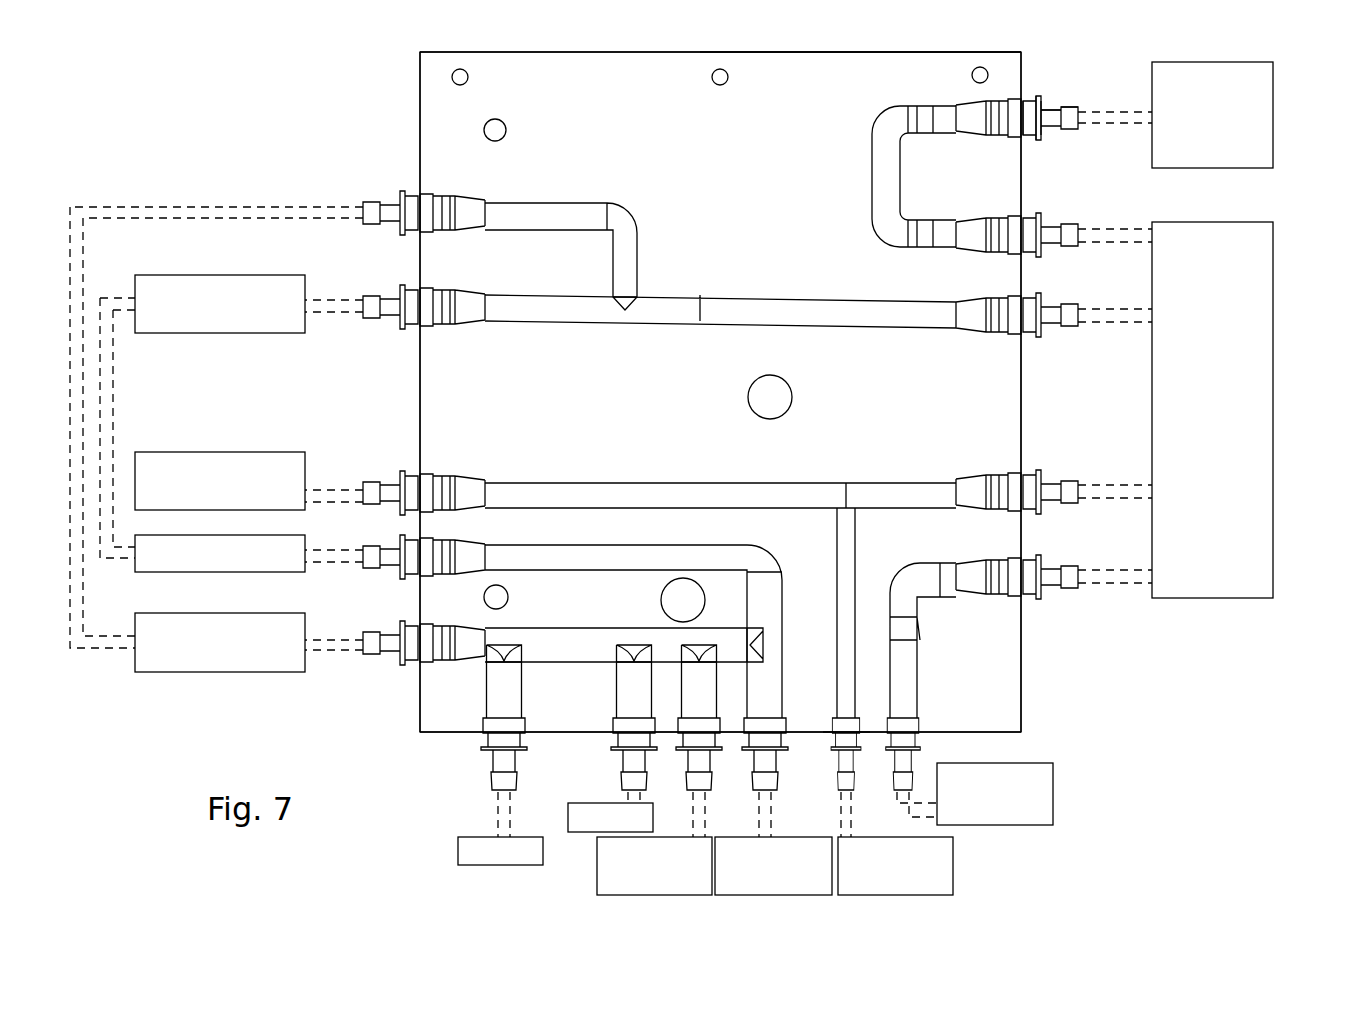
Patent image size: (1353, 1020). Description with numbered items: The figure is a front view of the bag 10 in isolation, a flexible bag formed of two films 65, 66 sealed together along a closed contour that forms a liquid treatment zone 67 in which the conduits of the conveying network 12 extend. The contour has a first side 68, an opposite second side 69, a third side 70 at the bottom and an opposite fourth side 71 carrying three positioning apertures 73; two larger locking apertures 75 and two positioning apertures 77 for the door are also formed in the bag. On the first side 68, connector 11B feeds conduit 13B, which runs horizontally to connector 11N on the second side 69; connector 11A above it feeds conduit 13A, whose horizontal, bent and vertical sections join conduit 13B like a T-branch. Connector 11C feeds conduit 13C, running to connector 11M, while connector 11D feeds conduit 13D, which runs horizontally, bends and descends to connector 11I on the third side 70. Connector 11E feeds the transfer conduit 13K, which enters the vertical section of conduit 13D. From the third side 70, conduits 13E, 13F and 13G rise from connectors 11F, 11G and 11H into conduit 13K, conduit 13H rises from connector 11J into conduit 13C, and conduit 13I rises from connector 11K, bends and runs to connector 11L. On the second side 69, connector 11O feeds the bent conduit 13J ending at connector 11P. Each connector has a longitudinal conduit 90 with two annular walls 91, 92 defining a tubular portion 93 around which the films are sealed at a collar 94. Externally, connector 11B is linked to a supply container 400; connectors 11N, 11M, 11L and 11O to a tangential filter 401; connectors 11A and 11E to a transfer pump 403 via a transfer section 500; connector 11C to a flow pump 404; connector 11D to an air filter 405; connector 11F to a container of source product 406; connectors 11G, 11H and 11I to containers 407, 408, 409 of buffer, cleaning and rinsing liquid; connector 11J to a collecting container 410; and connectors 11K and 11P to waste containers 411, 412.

The bag 10 is at (392, 112).
The connector 11A is at (393, 208).
The connector 11B is at (390, 305).
The connector 11C is at (393, 490).
The connector 11D is at (385, 555).
The connector 11E is at (393, 640).
The connector 11F is at (495, 762).
The connector 11G is at (625, 762).
The connector 11H is at (704, 760).
The connector 11I is at (768, 768).
The connector 11J is at (852, 768).
The connector 11K is at (905, 768).
The connector 11L is at (1070, 586).
The connector 11M is at (1070, 500).
The connector 11N is at (1065, 323).
The connector 11O is at (1065, 243).
The connector 11P is at (1063, 112).
The network 12 is at (431, 715).
The conduit 13A is at (572, 210).
The conduit 13B is at (697, 324).
The conduit 13C is at (605, 485).
The conduit 13D is at (595, 550).
The conduit 13E is at (515, 708).
The conduit 13F is at (625, 675).
The conduit 13G is at (700, 697).
The conduit 13H is at (856, 553).
The conduit 13I is at (948, 592).
The conduit 13J is at (875, 183).
The conduit 13K is at (453, 640).
The flexible film 65 is at (1024, 44).
The flexible film 66 is at (864, 72).
The liquid treatment zone 67 is at (765, 234).
The first side 68 is at (430, 386).
The second side 69 is at (1012, 404).
The third side 70 is at (820, 723).
The fourth side 71 is at (852, 56).
The through aperture 73 is at (468, 77).
The through aperture 75 is at (792, 397).
The positioning aperture 77 is at (506, 130).
The longitudinal conduit 90 is at (1070, 118).
The annular wall 91 is at (1035, 110).
The annular wall 92 is at (1045, 128).
The tubular portion 93 is at (1033, 128).
The collar 94 is at (1042, 110).
The supply container 400 is at (215, 275).
The tangential filter 401 is at (1273, 598).
The transfer pump 403 is at (280, 672).
The flow pump 404 is at (262, 452).
The filter 405 is at (297, 572).
The source 406 is at (458, 846).
The container of buffer product 407 is at (568, 805).
The container for cleaning liquid 408 is at (597, 880).
The container for rinsing liquid 409 is at (800, 836).
The collecting container 410 is at (954, 882).
The waste container 411 is at (1053, 800).
The waste container 412 is at (1273, 166).
The transfer section 500 is at (72, 410).